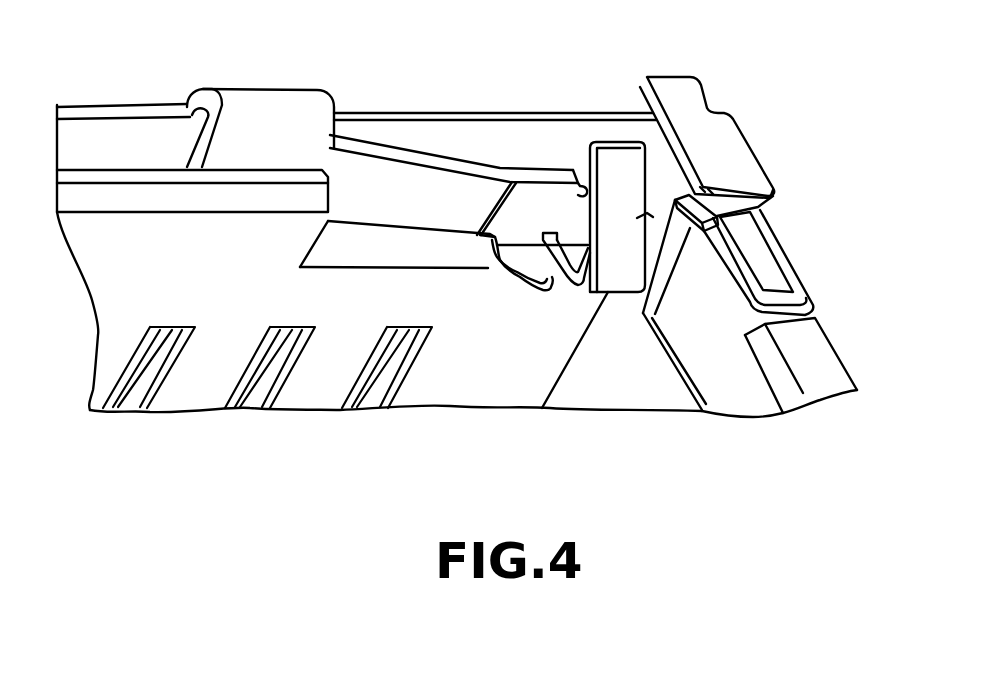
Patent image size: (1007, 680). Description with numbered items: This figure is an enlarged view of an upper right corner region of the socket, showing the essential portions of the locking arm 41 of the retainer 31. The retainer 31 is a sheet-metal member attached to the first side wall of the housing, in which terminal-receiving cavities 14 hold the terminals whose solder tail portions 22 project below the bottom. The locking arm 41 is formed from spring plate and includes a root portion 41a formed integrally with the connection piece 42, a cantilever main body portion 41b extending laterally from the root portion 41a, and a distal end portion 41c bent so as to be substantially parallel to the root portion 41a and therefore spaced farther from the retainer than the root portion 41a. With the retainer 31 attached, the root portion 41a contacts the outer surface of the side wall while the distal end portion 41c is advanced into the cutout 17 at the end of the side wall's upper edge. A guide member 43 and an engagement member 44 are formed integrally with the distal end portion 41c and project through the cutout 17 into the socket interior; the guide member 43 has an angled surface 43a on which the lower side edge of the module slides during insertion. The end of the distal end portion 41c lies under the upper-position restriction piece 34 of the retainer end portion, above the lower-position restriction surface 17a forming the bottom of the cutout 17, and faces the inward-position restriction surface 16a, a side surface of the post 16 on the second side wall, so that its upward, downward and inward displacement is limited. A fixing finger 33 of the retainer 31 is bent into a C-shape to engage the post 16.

The terminal-receiving cavity 14 is at (300, 332).
The post 16 is at (753, 250).
The inward-position restriction surface 16a is at (643, 260).
The cutout 17 is at (327, 245).
The lower-position restriction surface 17a is at (355, 253).
The tail portion 22 is at (387, 362).
The retainer 31 is at (512, 110).
The fixing finger 33 is at (705, 350).
The upper-position restriction piece 34 is at (670, 77).
The locking arm 41 is at (390, 153).
The root portion 41a is at (290, 160).
The main body portion 41b is at (438, 200).
The distal end portion 41c is at (553, 175).
The connection piece 42 is at (245, 123).
The guide member 43 is at (588, 293).
The angled surface 43a is at (623, 167).
The engagement member 44 is at (512, 278).